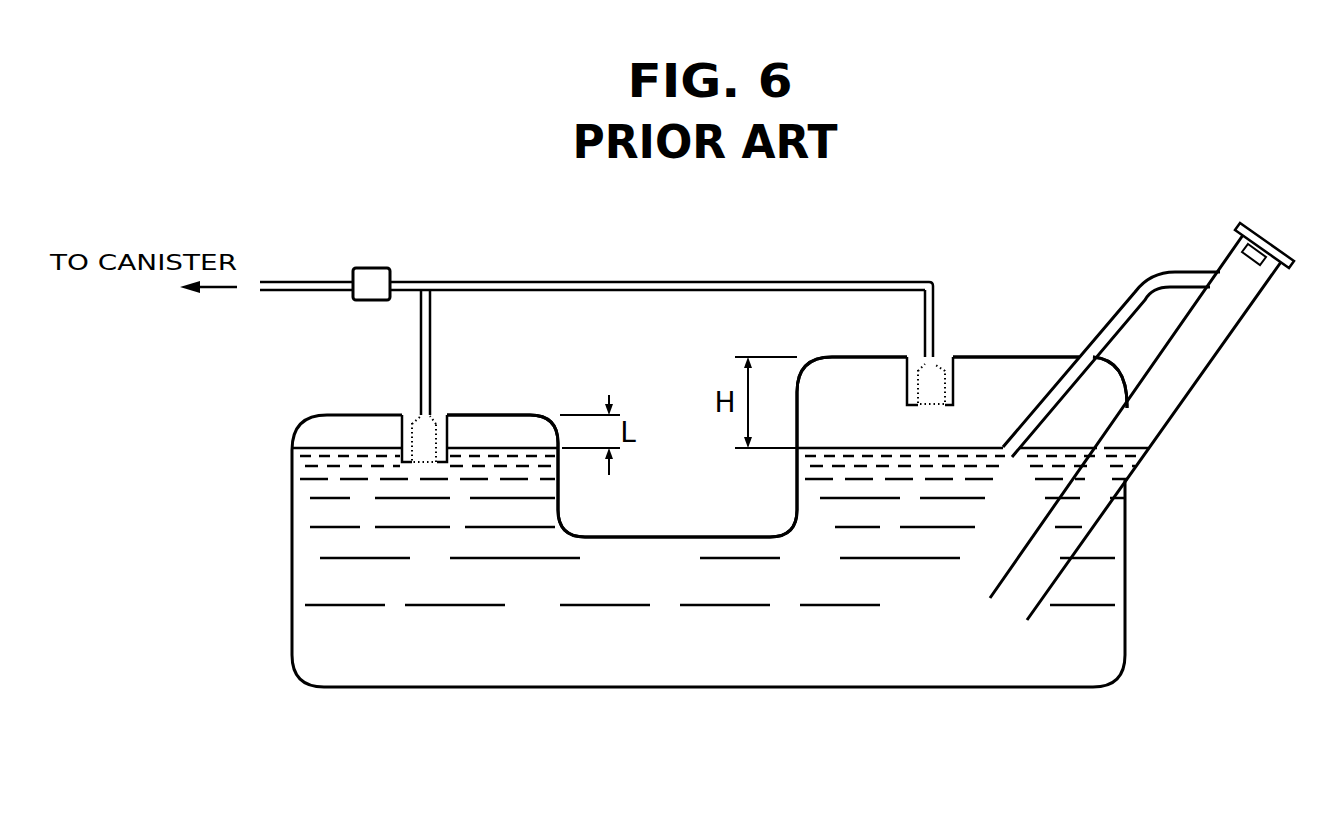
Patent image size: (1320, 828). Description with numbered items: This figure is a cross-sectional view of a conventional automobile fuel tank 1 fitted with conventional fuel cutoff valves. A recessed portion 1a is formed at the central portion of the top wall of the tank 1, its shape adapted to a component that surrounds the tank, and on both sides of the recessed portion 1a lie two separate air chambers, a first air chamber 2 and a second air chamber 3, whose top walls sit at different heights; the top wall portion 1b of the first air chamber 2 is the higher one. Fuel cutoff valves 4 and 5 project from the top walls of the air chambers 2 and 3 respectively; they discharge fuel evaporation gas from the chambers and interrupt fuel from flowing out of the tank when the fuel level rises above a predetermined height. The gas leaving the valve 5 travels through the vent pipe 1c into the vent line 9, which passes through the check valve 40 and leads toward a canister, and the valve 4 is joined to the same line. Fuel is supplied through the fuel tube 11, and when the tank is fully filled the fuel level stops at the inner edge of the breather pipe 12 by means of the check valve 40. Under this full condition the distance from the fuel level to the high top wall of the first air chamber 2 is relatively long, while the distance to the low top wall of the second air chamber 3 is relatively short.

The fuel tank 1 is at (280, 540).
The recessed portion 1a is at (683, 537).
The tank top wall portion 1b is at (1023, 356).
The vent pipe 1c is at (478, 413).
The first air chamber 2 is at (860, 393).
The second air chamber 3 is at (522, 435).
The fuel cutoff valve 4 is at (965, 384).
The fuel cutoff valve 5 is at (390, 428).
The vent line to canister 9 is at (310, 280).
The fuel tube 11 is at (1187, 393).
The breather pipe 12 is at (1155, 272).
The check valve 40 is at (375, 268).